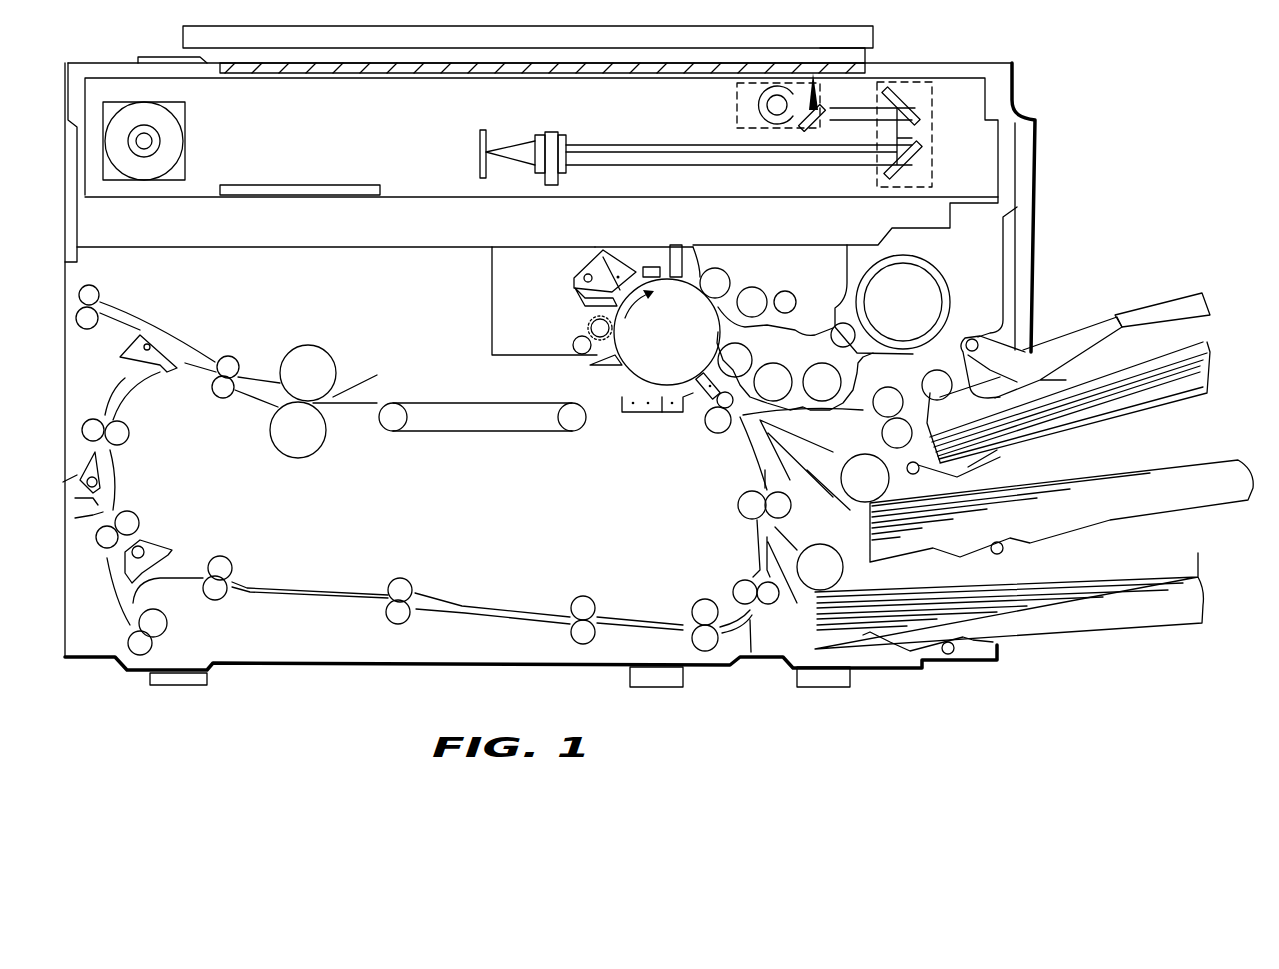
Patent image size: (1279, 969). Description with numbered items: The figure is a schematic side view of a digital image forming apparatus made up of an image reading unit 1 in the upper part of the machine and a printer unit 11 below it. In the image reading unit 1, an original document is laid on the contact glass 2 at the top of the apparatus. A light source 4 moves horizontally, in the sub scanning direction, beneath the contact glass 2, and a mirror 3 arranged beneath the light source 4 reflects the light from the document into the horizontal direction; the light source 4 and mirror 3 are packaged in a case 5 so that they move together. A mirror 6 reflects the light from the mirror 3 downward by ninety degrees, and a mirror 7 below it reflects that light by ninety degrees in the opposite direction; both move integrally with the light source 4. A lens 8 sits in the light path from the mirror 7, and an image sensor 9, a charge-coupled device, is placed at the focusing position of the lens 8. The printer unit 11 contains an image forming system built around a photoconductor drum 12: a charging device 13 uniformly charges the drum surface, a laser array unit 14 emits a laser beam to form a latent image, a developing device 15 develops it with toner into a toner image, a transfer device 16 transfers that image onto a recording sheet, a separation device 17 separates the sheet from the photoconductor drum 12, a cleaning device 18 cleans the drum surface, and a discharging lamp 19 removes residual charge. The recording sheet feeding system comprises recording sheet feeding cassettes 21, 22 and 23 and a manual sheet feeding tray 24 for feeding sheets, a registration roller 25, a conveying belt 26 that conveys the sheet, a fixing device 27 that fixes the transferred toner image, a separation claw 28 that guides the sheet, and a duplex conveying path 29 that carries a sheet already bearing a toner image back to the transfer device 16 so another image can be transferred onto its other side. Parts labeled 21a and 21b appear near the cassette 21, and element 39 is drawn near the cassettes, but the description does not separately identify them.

The image reading unit 1 is at (990, 102).
The contact glass 2 is at (276, 71).
The mirror 3 is at (824, 128).
The light source 4 is at (768, 108).
The case 5 is at (737, 92).
The mirror 6 is at (925, 110).
The mirror 7 is at (912, 155).
The lens 8 is at (548, 133).
The image sensor 9 is at (488, 150).
The printer unit 11 is at (260, 206).
The photoconductor drum 12 is at (667, 332).
The charging device 13 is at (648, 262).
The laser array unit 14 is at (673, 245).
The developing device 15 is at (933, 267).
The transfer device 16 is at (669, 416).
The separation device 17 is at (632, 416).
The cleaning device 18 is at (492, 340).
The discharging lamp 19 is at (605, 252).
The recording sheet feeding cassette 21 is at (1147, 405).
The toner conveying roller 21a is at (590, 326).
The blade holder 21b is at (582, 300).
The recording sheet feeding cassette 22 is at (1218, 512).
The recording sheet feeding cassette 23 is at (1143, 632).
The manual sheet feeding tray 24 is at (1182, 305).
The registration roller 25 is at (718, 422).
The conveying belt 26 is at (470, 432).
The fixing device 27 is at (300, 352).
The separation claw 28 is at (165, 372).
The duplex conveying path 29 is at (481, 601).
The paper stack 39 is at (1000, 448).